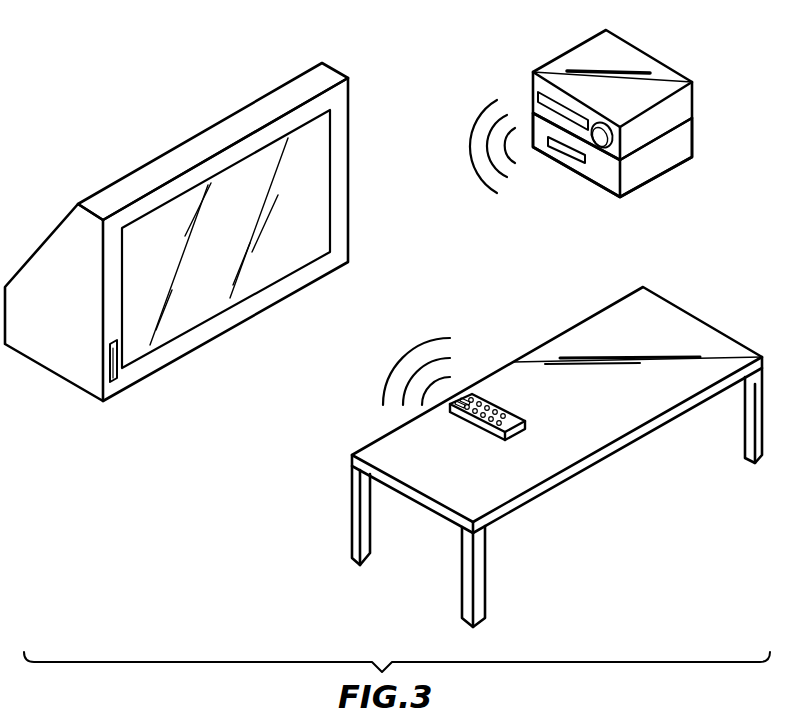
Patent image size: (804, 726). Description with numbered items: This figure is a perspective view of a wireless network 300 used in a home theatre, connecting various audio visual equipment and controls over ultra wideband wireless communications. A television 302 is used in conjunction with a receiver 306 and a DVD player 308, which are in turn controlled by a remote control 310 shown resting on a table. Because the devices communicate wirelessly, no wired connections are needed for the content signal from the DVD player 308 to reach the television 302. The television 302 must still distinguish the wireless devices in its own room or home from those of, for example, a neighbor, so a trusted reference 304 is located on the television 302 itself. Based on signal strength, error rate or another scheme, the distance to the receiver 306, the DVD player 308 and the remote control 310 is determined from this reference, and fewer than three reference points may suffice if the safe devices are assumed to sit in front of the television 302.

The wireless network 300 is at (137, 82).
The television 302 is at (75, 372).
The trusted reference 304 is at (117, 377).
The receiver 306 is at (689, 77).
The DVD player 308 is at (696, 135).
The remote control 310 is at (525, 418).